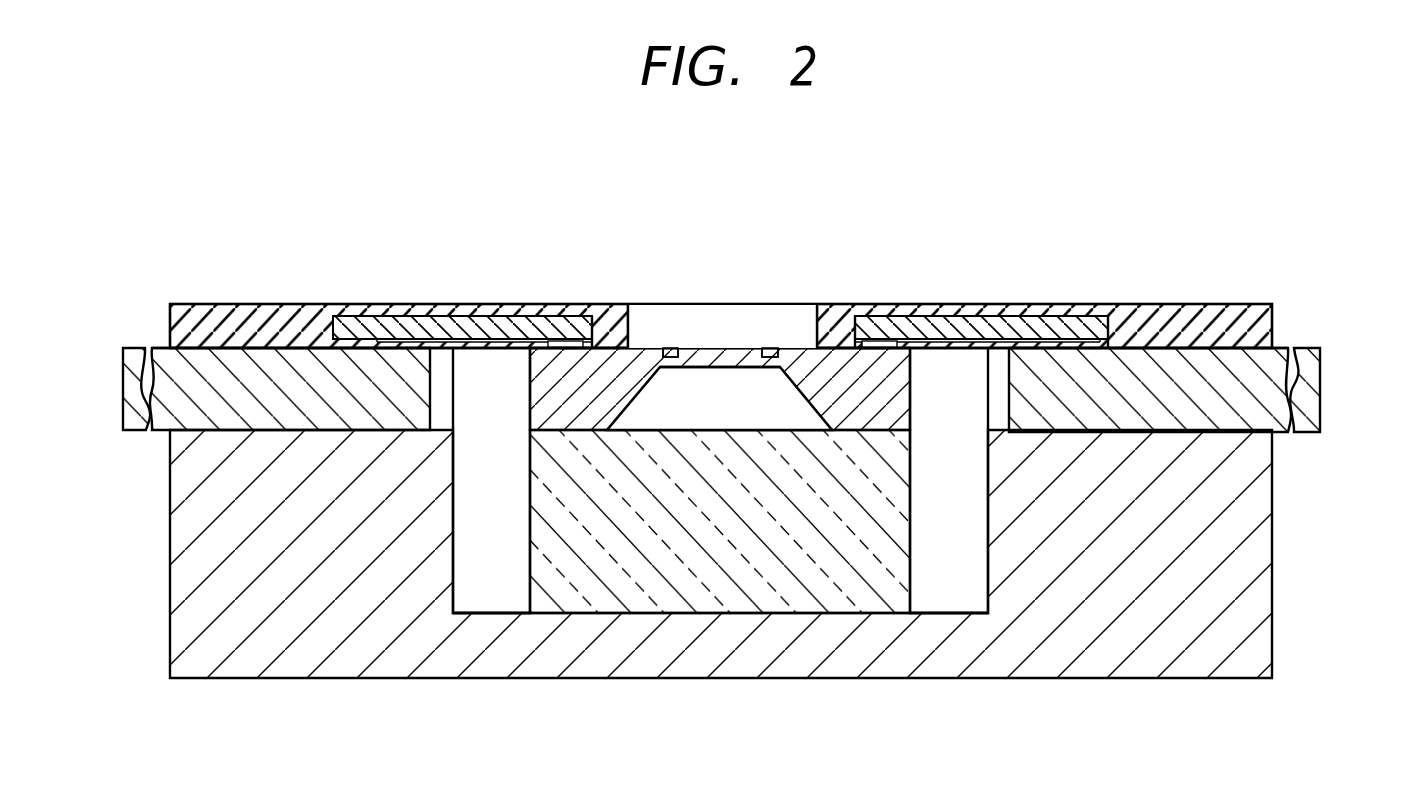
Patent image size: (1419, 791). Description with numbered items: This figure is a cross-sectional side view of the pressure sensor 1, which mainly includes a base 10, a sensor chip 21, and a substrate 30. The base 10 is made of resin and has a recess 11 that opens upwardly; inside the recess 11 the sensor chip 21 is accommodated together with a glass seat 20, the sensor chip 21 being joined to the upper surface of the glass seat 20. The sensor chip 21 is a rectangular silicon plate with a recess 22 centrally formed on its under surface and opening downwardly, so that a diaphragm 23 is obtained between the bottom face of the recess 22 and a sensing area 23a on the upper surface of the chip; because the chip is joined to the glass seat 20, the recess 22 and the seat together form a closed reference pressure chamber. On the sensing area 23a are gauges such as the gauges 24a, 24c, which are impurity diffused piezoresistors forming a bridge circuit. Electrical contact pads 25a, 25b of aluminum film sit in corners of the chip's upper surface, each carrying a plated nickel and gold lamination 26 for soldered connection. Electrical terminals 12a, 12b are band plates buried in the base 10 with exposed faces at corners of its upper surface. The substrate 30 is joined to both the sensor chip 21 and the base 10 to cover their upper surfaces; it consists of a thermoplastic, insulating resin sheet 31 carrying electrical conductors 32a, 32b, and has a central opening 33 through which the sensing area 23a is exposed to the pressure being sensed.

The pressure sensor 1 is at (350, 205).
The base 10 is at (919, 678).
The recess 11 is at (981, 570).
The electrical terminal 12a is at (133, 432).
The electrical terminal 12b is at (1305, 434).
The glass seat 20 is at (912, 491).
The sensor chip 21 is at (912, 371).
The recess 22 is at (799, 390).
The diaphragm 23 is at (699, 367).
The sensing area 23a is at (717, 366).
The gauge 24a is at (672, 348).
The gauge 24c is at (772, 348).
The electrical contact pad 25a is at (570, 349).
The electrical contact pad 25b is at (873, 349).
The lamination 26 is at (556, 341).
The substrate 30 is at (781, 271).
The resin sheet 31 is at (1188, 305).
The electrical conductor 32a is at (412, 305).
The electrical conductor 32b is at (966, 316).
The opening 33 is at (805, 348).